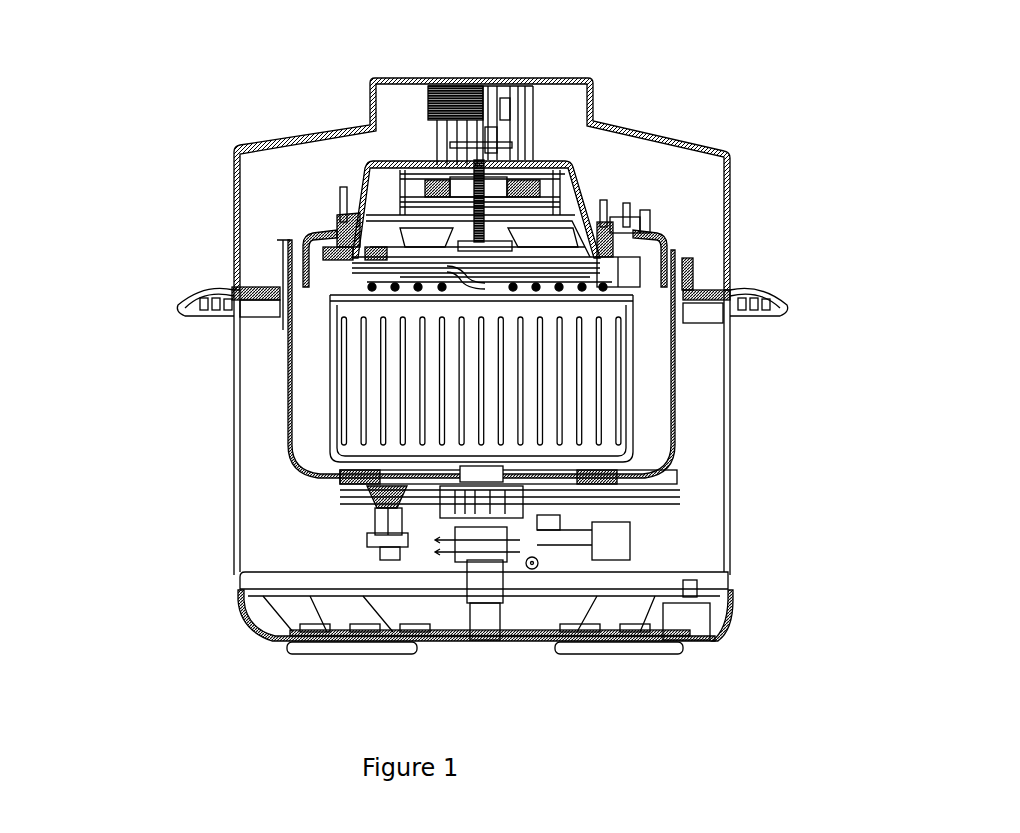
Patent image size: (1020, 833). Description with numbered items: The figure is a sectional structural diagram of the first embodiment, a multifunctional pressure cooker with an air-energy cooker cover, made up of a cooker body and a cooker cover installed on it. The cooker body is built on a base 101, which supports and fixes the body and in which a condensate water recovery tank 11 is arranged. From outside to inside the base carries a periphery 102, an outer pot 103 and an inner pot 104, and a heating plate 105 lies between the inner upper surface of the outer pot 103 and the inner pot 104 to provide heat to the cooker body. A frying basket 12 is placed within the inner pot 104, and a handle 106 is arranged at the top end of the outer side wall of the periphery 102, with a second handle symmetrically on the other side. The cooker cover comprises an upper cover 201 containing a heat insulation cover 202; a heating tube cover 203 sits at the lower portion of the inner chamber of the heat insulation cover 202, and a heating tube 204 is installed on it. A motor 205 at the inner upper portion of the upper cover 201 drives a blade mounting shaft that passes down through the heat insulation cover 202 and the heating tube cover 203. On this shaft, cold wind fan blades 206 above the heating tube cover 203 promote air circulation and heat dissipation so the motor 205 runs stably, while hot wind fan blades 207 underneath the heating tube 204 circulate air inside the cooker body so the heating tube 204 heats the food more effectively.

The condensate water recovery tank 11 is at (623, 618).
The frying basket 12 is at (347, 403).
The base 101 is at (243, 610).
The periphery 102 is at (728, 525).
The outer pot 103 is at (677, 490).
The inner pot 104 is at (673, 430).
The heating plate 105 is at (312, 494).
The handle 106 is at (787, 312).
The upper cover 201 is at (593, 120).
The heat insulation cover 202 is at (590, 178).
The heating tube cover 203 is at (645, 227).
The heating tube 204 is at (333, 301).
The motor 205 is at (428, 112).
The cold wind fan blades 206 is at (413, 178).
The hot wind fan blades 207 is at (370, 286).